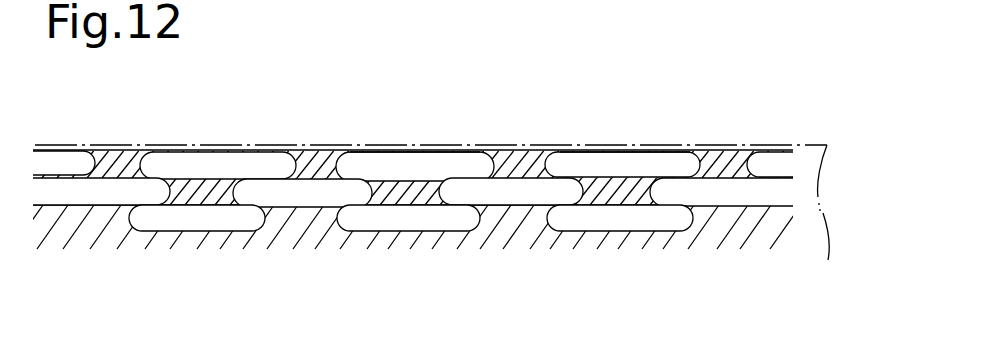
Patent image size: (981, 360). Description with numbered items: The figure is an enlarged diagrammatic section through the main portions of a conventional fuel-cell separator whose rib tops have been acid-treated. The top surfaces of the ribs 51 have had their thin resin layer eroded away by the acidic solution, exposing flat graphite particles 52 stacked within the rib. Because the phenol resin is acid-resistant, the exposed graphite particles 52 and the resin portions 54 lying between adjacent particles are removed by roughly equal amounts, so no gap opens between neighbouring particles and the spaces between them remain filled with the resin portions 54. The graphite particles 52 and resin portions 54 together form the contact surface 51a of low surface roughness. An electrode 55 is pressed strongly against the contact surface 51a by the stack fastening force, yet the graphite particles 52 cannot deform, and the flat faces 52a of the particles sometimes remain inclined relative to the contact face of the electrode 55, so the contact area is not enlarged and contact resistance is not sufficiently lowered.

The ribs 51 is at (504, 329).
The contact surface 51a is at (120, 148).
The graphite particles 52 is at (268, 183).
The flat faces 52a is at (395, 151).
The resin portions 54 is at (306, 152).
The electrode 55 is at (828, 260).